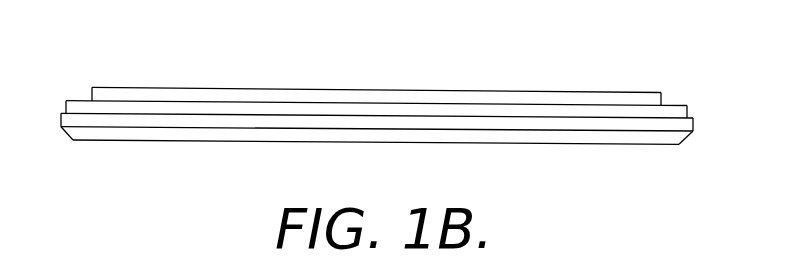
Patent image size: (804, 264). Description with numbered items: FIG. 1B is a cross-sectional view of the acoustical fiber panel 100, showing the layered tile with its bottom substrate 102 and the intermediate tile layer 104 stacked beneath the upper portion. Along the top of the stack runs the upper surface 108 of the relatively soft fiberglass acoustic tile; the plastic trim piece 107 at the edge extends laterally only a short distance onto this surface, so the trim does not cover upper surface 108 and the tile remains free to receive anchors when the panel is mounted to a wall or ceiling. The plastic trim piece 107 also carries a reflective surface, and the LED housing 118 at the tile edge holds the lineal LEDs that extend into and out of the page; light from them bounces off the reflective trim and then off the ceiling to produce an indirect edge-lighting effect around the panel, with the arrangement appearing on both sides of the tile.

The device assembly 100 is at (384, 99).
The substrate 102 is at (408, 143).
The intermediate layer 104 is at (82, 138).
The plastic trim piece 107 is at (650, 96).
The upper surface 108 is at (479, 88).
The LED housing 118 is at (680, 112).